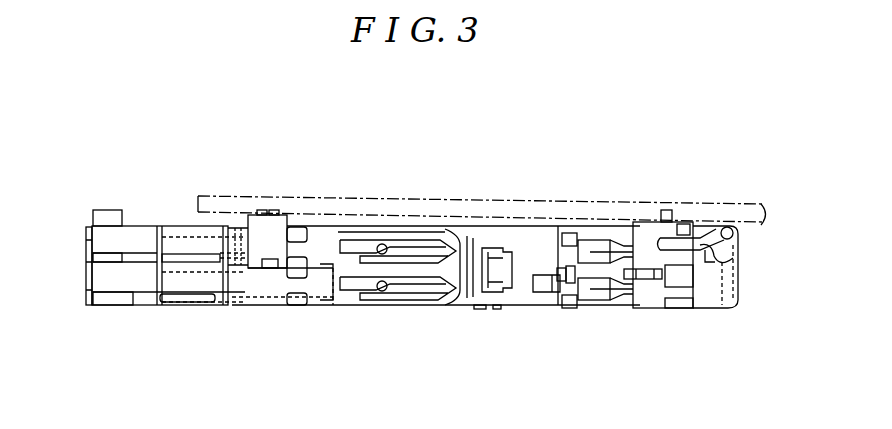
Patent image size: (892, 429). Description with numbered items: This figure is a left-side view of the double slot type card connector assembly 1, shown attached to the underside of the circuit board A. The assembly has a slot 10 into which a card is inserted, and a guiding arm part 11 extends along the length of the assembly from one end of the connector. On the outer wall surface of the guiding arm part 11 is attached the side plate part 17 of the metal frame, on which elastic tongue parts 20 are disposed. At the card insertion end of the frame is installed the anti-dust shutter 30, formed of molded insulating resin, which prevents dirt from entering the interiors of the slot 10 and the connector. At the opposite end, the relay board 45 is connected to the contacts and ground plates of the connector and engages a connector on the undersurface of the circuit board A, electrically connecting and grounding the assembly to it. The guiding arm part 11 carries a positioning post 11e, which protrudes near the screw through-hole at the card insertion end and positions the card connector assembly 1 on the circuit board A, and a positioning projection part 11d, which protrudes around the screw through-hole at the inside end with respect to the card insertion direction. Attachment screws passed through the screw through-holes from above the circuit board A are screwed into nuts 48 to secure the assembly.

The card connector assembly 1 is at (556, 189).
The slot 10 is at (299, 224).
The guiding arm part 11 is at (188, 244).
The positioning projection part 11d is at (263, 212).
The positioning post 11e is at (665, 211).
The side plate part 17 is at (523, 273).
The elastic tongue part 20 is at (634, 303).
The anti-dust shutter 30 is at (738, 300).
The relay board 45 is at (86, 233).
The nut 48 is at (647, 281).
The circuit board A is at (453, 205).